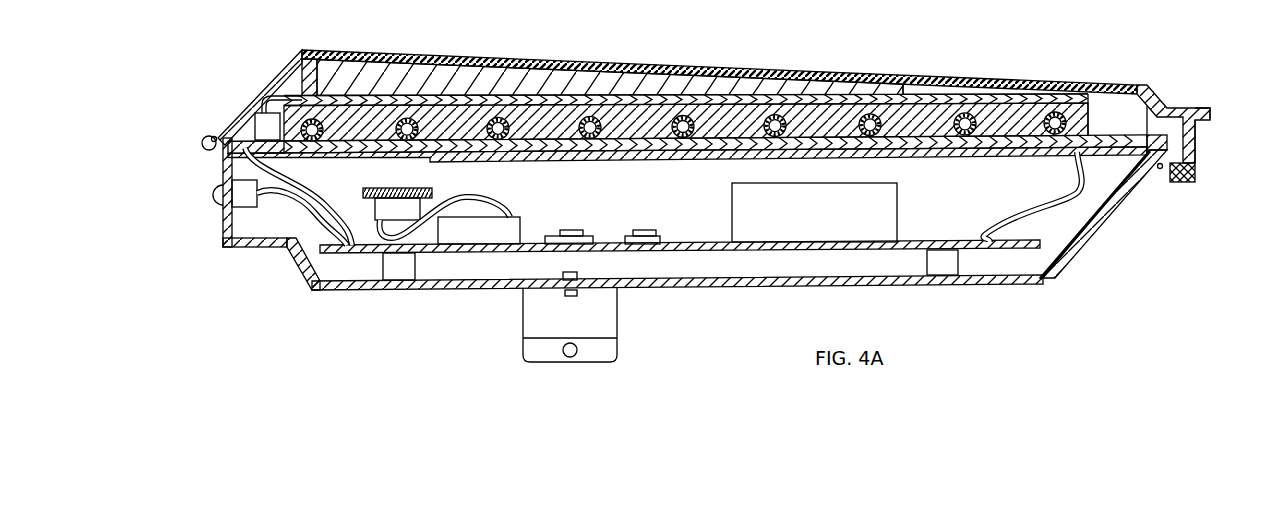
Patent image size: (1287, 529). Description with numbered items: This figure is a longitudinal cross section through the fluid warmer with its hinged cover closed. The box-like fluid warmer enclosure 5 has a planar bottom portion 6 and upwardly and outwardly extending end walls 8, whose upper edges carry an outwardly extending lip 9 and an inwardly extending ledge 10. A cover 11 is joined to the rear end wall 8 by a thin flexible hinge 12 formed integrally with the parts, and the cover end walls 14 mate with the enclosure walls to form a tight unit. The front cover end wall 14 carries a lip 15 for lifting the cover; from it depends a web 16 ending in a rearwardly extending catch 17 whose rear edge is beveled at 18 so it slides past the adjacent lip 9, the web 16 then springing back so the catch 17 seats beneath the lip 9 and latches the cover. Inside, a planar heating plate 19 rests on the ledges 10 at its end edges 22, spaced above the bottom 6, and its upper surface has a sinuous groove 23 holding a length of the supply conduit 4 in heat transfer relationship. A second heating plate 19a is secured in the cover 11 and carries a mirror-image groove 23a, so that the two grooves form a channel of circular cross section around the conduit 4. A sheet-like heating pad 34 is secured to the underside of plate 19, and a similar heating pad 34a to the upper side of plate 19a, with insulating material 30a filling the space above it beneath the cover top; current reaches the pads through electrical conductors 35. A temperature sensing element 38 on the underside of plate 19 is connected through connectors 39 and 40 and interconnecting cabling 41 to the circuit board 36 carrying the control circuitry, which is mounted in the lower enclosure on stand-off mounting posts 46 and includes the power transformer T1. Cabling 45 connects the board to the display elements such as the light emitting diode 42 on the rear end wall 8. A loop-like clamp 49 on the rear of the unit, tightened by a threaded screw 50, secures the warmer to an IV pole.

The supply conduit 4 is at (312, 119).
The fluid warmer enclosure 5 is at (1050, 279).
The bottom portion 6 is at (837, 285).
The end wall 8 is at (1097, 218).
The lip 9 is at (206, 135).
The ledge 10 is at (222, 165).
The cover 11 is at (353, 57).
The hinge 12 is at (202, 143).
The cover end wall 14 is at (280, 72).
The lip 15 is at (1210, 108).
The web 16 is at (1197, 143).
The catch 17 is at (1197, 178).
The bevel 18 is at (1167, 167).
The heating plate 19 is at (950, 157).
The second heating plate 19a is at (550, 113).
The end edge 22 is at (252, 140).
The groove 23 is at (1047, 170).
The groove 23a is at (398, 108).
The insulating material 30a is at (1073, 90).
The heating pad 34 is at (917, 157).
The heating pad 34a is at (820, 92).
The electrical conductors 35 is at (288, 180).
The circuit board 36 is at (715, 252).
The temperature sensing element 38 is at (387, 150).
The electrical connector 39 is at (420, 208).
The electrical connector 40 is at (521, 226).
The interconnecting cabling 41 is at (510, 197).
The light emitting diode 42 is at (213, 196).
The cabling 45 is at (317, 223).
The stand-off mounting posts 46 is at (395, 268).
The clamp 49 is at (617, 318).
The threaded screw 50 is at (577, 350).
The transformer T1 is at (731, 205).